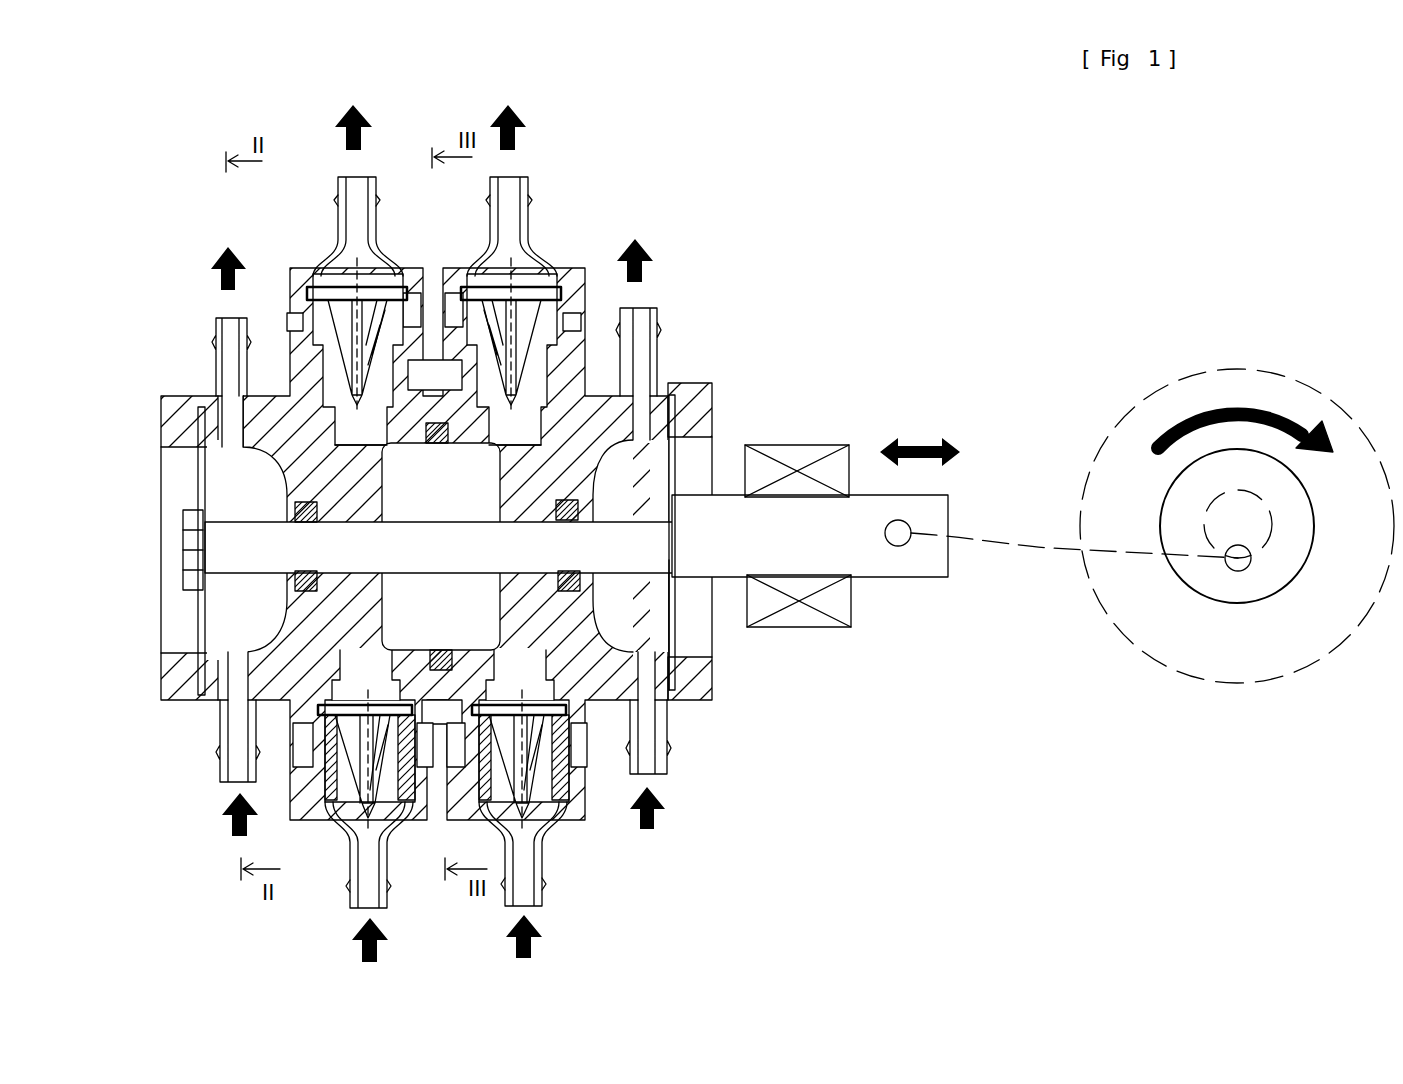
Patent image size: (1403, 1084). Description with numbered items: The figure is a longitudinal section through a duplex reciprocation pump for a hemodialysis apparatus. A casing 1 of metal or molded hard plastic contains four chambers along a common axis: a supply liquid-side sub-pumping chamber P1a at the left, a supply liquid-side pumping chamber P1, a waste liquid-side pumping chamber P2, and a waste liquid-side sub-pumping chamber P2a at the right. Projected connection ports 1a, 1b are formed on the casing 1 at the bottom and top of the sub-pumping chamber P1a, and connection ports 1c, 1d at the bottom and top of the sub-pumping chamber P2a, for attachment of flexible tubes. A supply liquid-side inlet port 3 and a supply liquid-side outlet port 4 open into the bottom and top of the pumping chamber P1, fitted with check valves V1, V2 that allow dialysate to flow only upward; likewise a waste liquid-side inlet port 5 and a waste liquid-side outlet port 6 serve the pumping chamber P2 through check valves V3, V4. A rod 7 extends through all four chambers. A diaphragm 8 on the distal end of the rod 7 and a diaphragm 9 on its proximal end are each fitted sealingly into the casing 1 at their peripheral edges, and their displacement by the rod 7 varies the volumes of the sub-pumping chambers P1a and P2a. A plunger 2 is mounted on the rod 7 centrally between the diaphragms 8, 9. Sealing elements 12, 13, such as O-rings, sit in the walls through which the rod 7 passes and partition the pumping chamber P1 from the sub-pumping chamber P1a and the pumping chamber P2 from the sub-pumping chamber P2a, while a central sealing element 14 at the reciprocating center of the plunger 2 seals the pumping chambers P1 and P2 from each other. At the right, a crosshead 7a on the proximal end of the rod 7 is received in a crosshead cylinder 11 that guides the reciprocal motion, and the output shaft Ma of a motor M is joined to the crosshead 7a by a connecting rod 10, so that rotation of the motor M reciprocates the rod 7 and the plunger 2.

The casing 1 is at (155, 392).
The connection port 1a is at (220, 748).
The connection port 1b is at (215, 370).
The connection port 1c is at (668, 746).
The connection port 1d is at (658, 344).
The plunger 2 is at (383, 622).
The supply liquid-side inlet port 3 is at (348, 866).
The supply liquid-side outlet port 4 is at (337, 216).
The waste liquid-side inlet port 5 is at (545, 873).
The waste liquid-side outlet port 6 is at (530, 194).
The rod 7 is at (205, 545).
The crosshead 7a is at (936, 572).
The diaphragm 8 is at (197, 478).
The diaphragm 9 is at (690, 424).
The connecting rod 10 is at (1032, 552).
The crosshead cylinder 11 is at (810, 444).
The sealing element 12 is at (294, 590).
The sealing element 13 is at (585, 582).
The central sealing element 14 is at (441, 670).
The check valve V1 is at (362, 792).
The check valve V2 is at (308, 292).
The check valve V3 is at (530, 775).
The check valve V4 is at (545, 288).
The supply liquid-side pumping chamber P1 is at (361, 475).
The supply liquid-side sub-pumping chamber P1a is at (247, 548).
The waste liquid-side pumping chamber P2 is at (515, 474).
The waste liquid-side sub-pumping chamber P2a is at (630, 550).
The motor M is at (1300, 385).
The output shaft Ma is at (1165, 488).